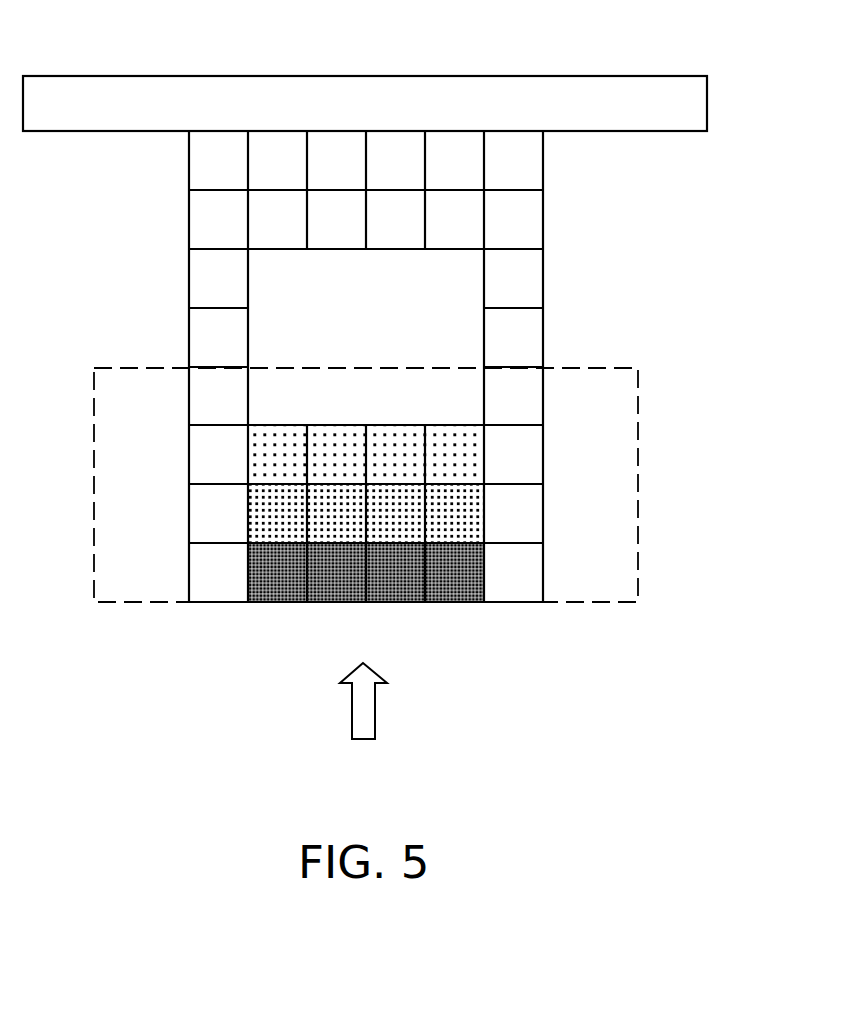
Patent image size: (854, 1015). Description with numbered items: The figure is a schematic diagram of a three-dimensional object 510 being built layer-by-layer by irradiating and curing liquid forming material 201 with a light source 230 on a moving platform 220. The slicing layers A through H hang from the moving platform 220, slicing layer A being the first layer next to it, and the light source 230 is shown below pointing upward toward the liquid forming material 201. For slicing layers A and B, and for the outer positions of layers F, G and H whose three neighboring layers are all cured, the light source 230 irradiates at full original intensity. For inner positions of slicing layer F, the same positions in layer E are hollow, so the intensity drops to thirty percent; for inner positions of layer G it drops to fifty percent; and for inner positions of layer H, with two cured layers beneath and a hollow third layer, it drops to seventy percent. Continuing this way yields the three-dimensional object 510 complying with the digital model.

The moving platform 220 is at (603, 77).
The 3D object 510 is at (605, 192).
The liquid forming material 201 is at (602, 421).
The light source 230 is at (363, 720).